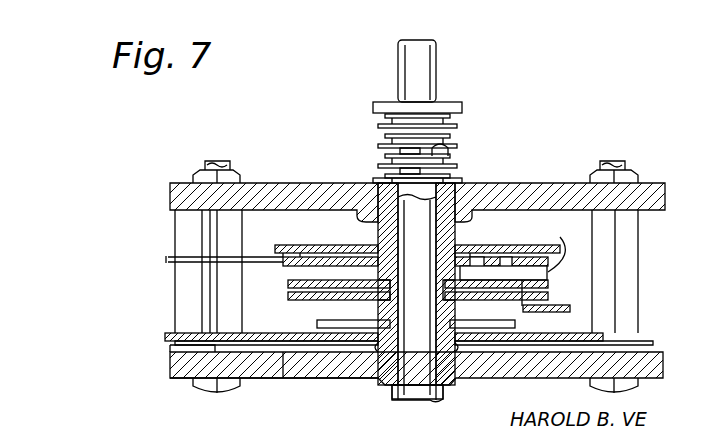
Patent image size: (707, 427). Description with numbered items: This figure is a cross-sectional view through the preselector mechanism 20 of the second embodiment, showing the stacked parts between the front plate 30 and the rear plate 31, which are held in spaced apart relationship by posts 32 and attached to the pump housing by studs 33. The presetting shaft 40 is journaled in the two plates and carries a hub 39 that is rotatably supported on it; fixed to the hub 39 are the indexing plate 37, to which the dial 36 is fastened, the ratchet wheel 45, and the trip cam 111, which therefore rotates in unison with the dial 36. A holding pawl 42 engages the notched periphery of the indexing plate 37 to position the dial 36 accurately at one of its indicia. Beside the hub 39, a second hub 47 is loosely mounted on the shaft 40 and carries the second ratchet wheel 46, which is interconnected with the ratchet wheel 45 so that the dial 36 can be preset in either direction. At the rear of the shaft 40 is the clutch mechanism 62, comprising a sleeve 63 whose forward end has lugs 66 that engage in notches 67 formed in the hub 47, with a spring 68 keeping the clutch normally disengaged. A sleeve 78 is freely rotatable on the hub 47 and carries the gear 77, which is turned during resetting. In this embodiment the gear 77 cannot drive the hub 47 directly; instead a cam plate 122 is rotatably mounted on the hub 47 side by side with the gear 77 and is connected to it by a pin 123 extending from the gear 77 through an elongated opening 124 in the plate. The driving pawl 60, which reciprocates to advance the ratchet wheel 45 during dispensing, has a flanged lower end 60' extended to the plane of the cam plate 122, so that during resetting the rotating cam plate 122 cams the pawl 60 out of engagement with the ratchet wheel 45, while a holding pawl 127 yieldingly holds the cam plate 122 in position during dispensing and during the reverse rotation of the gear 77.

The preselector mechanism 20 is at (274, 392).
The front plate 30 is at (176, 374).
The rear plate 31 is at (172, 192).
The posts 32 is at (234, 218).
The studs 33 is at (206, 165).
The dial 36 is at (290, 354).
The indexing plate 37 is at (266, 333).
The hub 39 is at (452, 350).
The presetting shaft 40 is at (402, 395).
The holding pawl 42 is at (170, 345).
The ratchet wheel 45 is at (548, 296).
The second ratchet wheel 46 is at (548, 272).
The hub 47 is at (378, 236).
The driving pawl 60 is at (549, 319).
The flanged lower end 60' is at (563, 245).
The clutch mechanism 62 is at (455, 103).
The sleeve 63 is at (385, 126).
The lugs 66 is at (455, 140).
The notches 67 is at (440, 165).
The spring 68 is at (388, 150).
The gear 77 is at (292, 247).
The sleeve 78 is at (390, 268).
The trip cam 111 is at (320, 322).
The cam plate 122 is at (286, 266).
The pin 123 is at (477, 258).
The elongated opening 124 is at (506, 258).
The holding pawl 127 is at (168, 263).